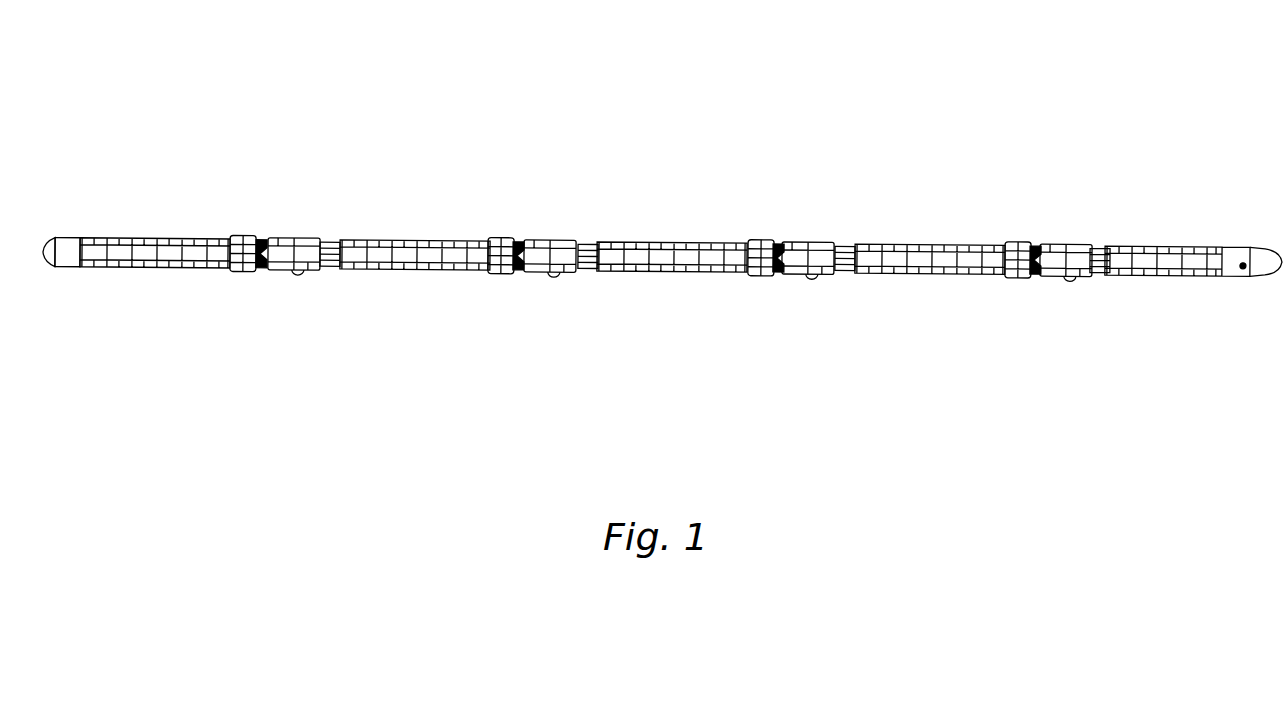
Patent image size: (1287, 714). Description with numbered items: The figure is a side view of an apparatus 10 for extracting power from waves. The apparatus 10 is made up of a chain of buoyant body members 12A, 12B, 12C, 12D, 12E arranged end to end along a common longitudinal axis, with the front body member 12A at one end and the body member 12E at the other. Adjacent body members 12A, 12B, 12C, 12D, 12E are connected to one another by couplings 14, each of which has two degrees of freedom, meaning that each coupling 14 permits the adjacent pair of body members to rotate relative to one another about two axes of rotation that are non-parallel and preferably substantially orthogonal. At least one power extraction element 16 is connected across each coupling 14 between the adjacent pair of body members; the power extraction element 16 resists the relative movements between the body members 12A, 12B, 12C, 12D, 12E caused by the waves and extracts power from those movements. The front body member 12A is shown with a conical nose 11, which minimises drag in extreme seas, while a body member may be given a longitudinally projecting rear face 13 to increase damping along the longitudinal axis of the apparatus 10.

The apparatus 10 is at (729, 138).
The conical nose 11 is at (1270, 278).
The front body member 12A is at (1170, 247).
The body member 12B is at (913, 277).
The body member 12C is at (645, 277).
The body member 12D is at (390, 238).
The body member 12E is at (137, 237).
The longitudinally projecting rear face 13 is at (45, 238).
The coupling 14 is at (258, 240).
The power extraction element 16 is at (258, 273).